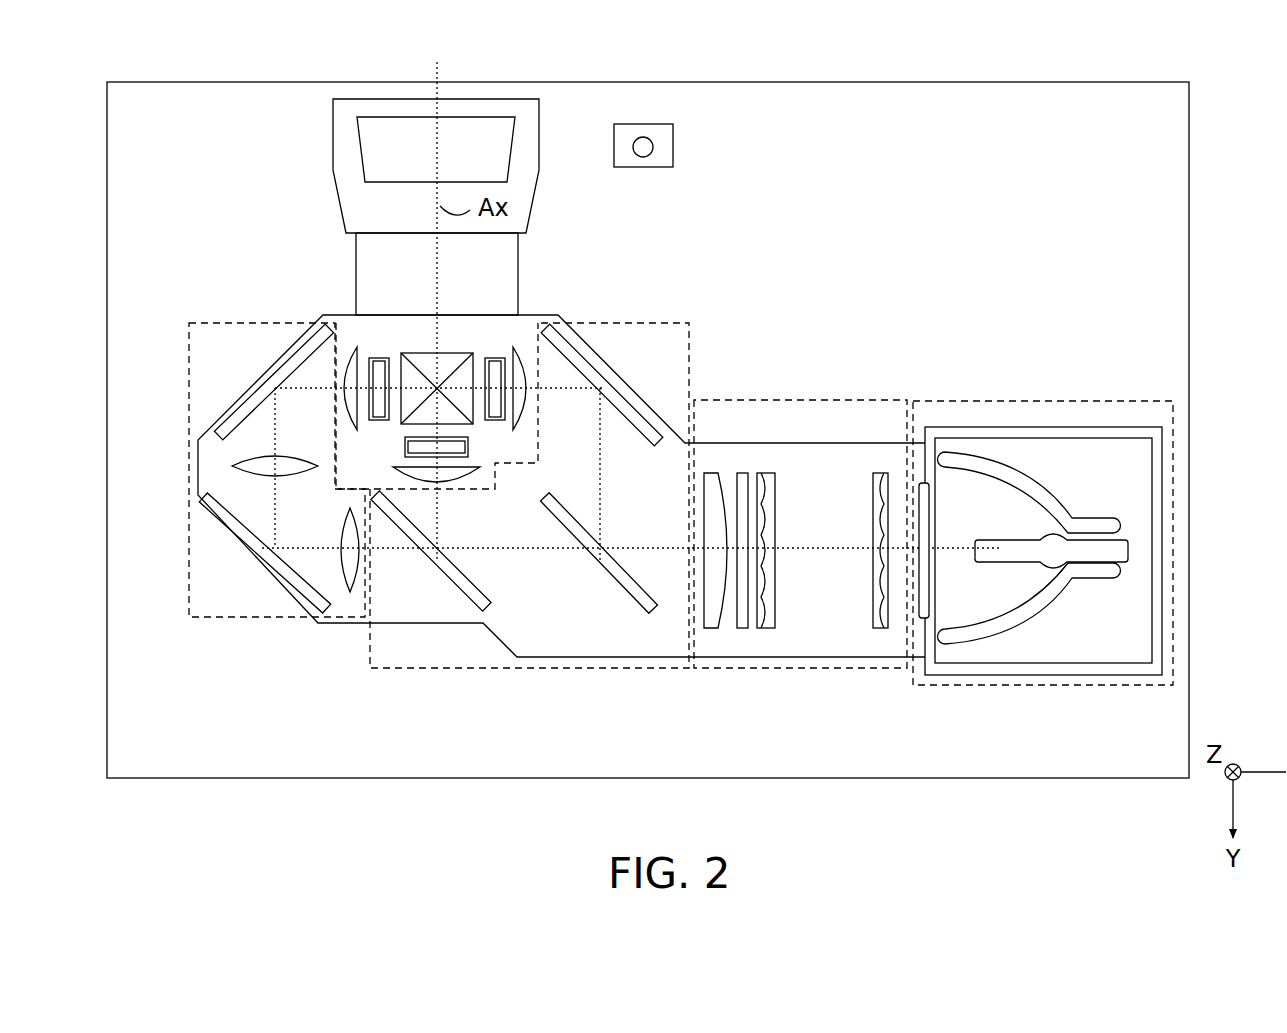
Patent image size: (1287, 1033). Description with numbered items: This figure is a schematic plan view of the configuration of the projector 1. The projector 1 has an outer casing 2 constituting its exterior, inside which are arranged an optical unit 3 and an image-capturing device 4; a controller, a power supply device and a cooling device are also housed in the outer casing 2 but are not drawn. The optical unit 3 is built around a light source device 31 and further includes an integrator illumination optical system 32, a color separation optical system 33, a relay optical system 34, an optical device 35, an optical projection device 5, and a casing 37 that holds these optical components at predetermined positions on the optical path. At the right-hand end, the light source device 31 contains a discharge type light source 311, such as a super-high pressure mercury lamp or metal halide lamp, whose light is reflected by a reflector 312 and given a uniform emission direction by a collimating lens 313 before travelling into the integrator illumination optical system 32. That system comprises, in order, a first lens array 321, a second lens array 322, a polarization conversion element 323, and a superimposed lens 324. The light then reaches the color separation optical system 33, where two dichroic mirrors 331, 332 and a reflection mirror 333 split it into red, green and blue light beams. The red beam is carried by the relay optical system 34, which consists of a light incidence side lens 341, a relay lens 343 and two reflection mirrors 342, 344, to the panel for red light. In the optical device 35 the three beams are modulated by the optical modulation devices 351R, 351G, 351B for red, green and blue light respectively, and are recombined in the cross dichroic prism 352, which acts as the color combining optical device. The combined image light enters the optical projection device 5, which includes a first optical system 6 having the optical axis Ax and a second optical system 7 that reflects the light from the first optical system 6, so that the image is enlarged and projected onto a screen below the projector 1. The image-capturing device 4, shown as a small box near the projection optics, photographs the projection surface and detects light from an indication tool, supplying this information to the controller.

The projector 1 is at (1008, 68).
The outer casing 2 is at (104, 276).
The optical unit 3 is at (683, 305).
The image-capturing device 4 is at (664, 156).
The optical projection device 5 is at (322, 142).
The first optical system 6 is at (355, 248).
The second optical system 7 is at (378, 166).
The light source device 31 is at (960, 690).
The light source 311 is at (1013, 556).
The reflector 312 is at (1047, 597).
The collimating lens 313 is at (921, 600).
The integrator illumination optical system 32 is at (745, 672).
The first lens array 321 is at (884, 520).
The second lens array 322 is at (767, 520).
The polarization conversion element 323 is at (742, 520).
The superimposed lens 324 is at (720, 520).
The color separation optical system 33 is at (600, 672).
The dichroic mirror 331 is at (620, 592).
The dichroic mirror 332 is at (460, 590).
The reflection mirror 333 is at (620, 398).
The relay optical system 34 is at (187, 470).
The light incidence side lens 341 is at (341, 590).
The reflection mirror 342 is at (200, 497).
The relay lens 343 is at (287, 470).
The reflection mirror 344 is at (262, 402).
The optical device 35 is at (447, 327).
The optical modulation device of R light 351R is at (378, 348).
The optical modulation device of G light 351G is at (473, 447).
The optical modulation device of B light 351B is at (495, 348).
The cross dichroic prism 352 is at (455, 350).
The casing 37 is at (665, 660).